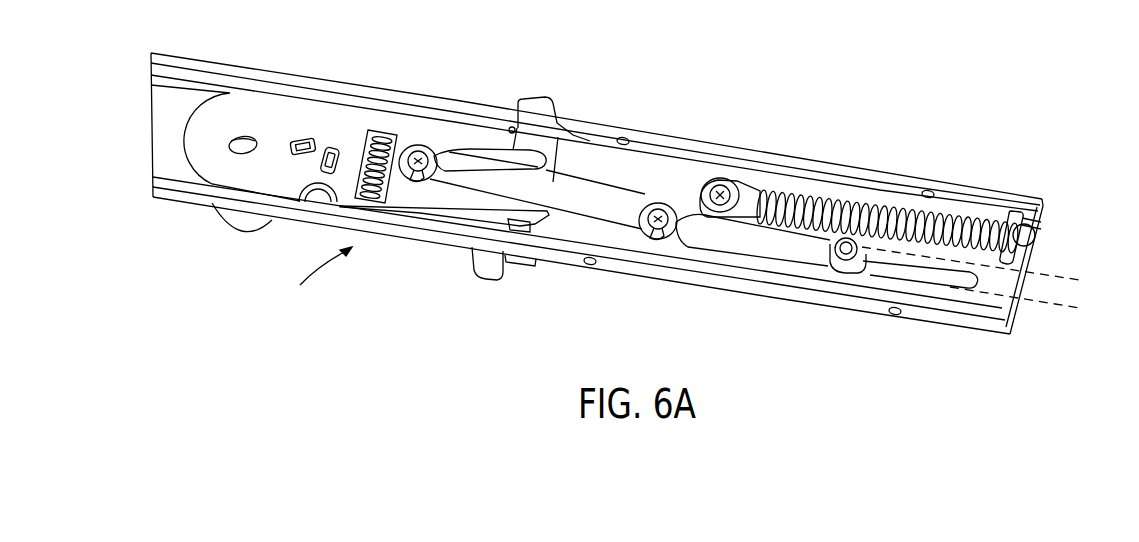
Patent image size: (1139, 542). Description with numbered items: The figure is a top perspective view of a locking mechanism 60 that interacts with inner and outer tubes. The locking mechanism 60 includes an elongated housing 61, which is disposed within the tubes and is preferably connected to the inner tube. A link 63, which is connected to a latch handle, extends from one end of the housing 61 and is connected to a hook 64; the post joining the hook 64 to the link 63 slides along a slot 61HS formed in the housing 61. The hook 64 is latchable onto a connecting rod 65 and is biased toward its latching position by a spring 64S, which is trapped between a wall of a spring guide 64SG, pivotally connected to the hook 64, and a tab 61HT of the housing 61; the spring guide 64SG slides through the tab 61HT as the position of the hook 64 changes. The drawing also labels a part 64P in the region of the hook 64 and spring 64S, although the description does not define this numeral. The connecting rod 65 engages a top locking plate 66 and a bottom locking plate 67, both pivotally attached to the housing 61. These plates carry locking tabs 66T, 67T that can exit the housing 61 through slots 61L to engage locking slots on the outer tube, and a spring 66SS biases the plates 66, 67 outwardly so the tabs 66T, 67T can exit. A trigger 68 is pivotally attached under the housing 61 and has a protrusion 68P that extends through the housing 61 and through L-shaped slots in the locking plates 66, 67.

The locking mechanism 60 is at (322, 276).
The housing 61 is at (681, 285).
The slots 61L is at (527, 259).
The slot 61HS is at (938, 284).
The tab 61HT is at (1038, 250).
The link 63 is at (1045, 306).
The hook 64 is at (767, 248).
The plunger 64P is at (862, 207).
The spring 64S is at (963, 206).
The spring guide 64SG is at (1031, 222).
The connecting rod 65 is at (485, 185).
The top locking plate 66 is at (455, 103).
The spring 66SS is at (385, 133).
The locking tab 66T is at (548, 100).
The bottom locking plate 67 is at (447, 221).
The locking tab 67T is at (498, 248).
The trigger 68 is at (242, 229).
The protrusion 68P is at (328, 147).